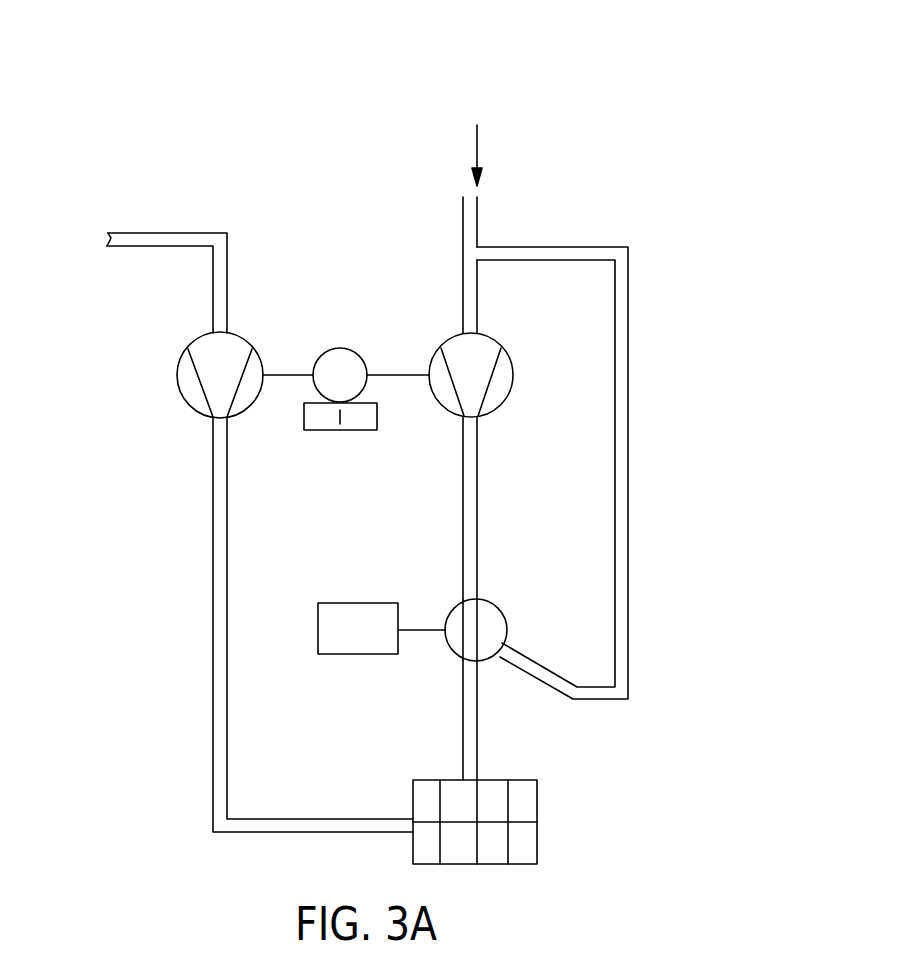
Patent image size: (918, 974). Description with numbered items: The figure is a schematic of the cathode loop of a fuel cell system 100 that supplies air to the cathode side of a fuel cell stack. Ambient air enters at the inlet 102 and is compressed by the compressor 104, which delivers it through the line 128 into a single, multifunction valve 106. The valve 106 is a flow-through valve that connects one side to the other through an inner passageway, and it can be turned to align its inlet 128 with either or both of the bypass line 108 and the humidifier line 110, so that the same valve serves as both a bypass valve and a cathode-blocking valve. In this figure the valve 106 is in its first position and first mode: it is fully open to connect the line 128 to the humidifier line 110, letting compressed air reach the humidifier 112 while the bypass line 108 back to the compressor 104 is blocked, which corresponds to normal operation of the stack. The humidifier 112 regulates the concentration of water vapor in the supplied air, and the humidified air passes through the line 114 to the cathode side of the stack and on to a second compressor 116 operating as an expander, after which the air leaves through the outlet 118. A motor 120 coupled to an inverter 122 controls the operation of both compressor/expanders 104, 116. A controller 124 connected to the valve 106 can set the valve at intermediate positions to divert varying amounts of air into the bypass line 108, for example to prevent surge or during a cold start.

The system 100 is at (547, 62).
The inlet 102 is at (478, 197).
The compressor 104 is at (492, 333).
The multifunction valve 106 is at (495, 606).
The bypass line 108 is at (628, 511).
The humidifier line 110 is at (480, 728).
The humidifier 112 is at (540, 852).
The line 114 is at (238, 827).
The compressor 116 is at (177, 378).
The outlet 118 is at (107, 238).
The motor 120 is at (340, 348).
The inverter 122 is at (333, 430).
The controller 124 is at (342, 655).
The inlet of the valve 128 is at (478, 510).